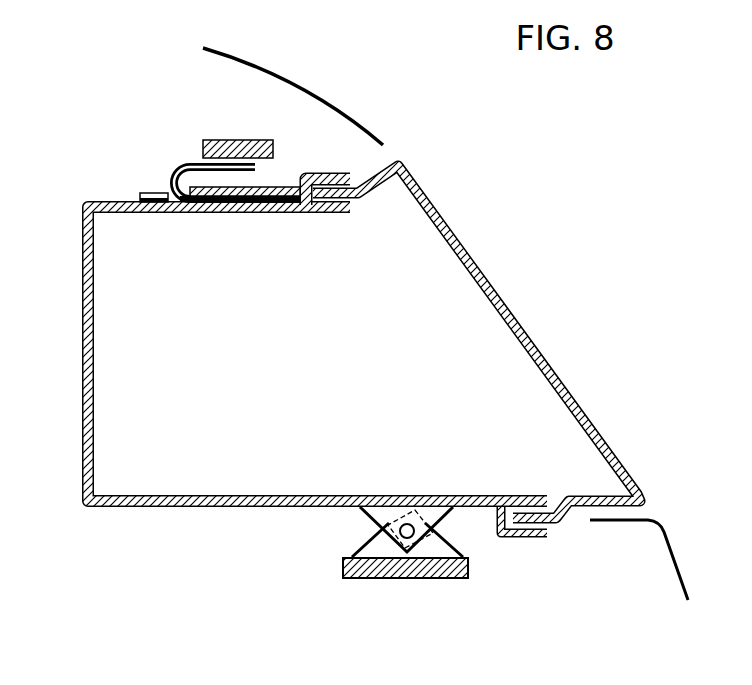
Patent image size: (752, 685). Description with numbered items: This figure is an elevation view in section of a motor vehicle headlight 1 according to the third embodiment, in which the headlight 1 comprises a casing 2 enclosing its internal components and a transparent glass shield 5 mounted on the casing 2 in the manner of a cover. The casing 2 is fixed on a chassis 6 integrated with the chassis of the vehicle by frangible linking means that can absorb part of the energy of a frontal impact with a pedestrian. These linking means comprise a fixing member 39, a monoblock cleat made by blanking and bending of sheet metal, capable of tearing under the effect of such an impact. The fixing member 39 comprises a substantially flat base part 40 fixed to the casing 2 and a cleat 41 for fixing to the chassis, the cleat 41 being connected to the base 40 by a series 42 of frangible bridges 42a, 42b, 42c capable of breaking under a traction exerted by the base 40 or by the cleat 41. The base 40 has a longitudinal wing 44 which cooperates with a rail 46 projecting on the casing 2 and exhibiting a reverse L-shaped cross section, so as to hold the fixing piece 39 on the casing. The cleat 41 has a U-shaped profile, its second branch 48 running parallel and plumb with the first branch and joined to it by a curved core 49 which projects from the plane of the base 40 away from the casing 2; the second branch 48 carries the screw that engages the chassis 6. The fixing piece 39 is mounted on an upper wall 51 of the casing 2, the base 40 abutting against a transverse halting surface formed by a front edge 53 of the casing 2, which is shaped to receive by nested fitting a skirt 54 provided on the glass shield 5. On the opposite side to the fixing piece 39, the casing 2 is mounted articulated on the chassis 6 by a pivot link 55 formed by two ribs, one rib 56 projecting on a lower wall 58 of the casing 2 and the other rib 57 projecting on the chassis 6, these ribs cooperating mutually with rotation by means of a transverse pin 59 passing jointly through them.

The headlight 1 is at (556, 200).
The casing 2 is at (82, 372).
The glass shield 5 is at (572, 363).
The chassis 6 is at (213, 140).
The fixing member 39 is at (275, 176).
The base part 40 is at (297, 185).
The cleat 41 is at (177, 150).
The series of frangible bridges 42 is at (183, 213).
The frangible bridge 42a is at (202, 213).
The frangible bridge 42b is at (227, 213).
The frangible bridge 42c is at (250, 213).
The longitudinal wing 44 is at (142, 193).
The rail 46 is at (155, 190).
The second branch 48 is at (193, 158).
The curved core 49 is at (160, 188).
The upper wall 51 is at (123, 217).
The front edge 53 is at (340, 160).
The skirt 54 is at (357, 198).
The pivot link 55 is at (343, 528).
The rib 56 is at (387, 517).
The rib 57 is at (363, 578).
The lower wall 58 is at (195, 497).
The transverse pin 59 is at (430, 537).